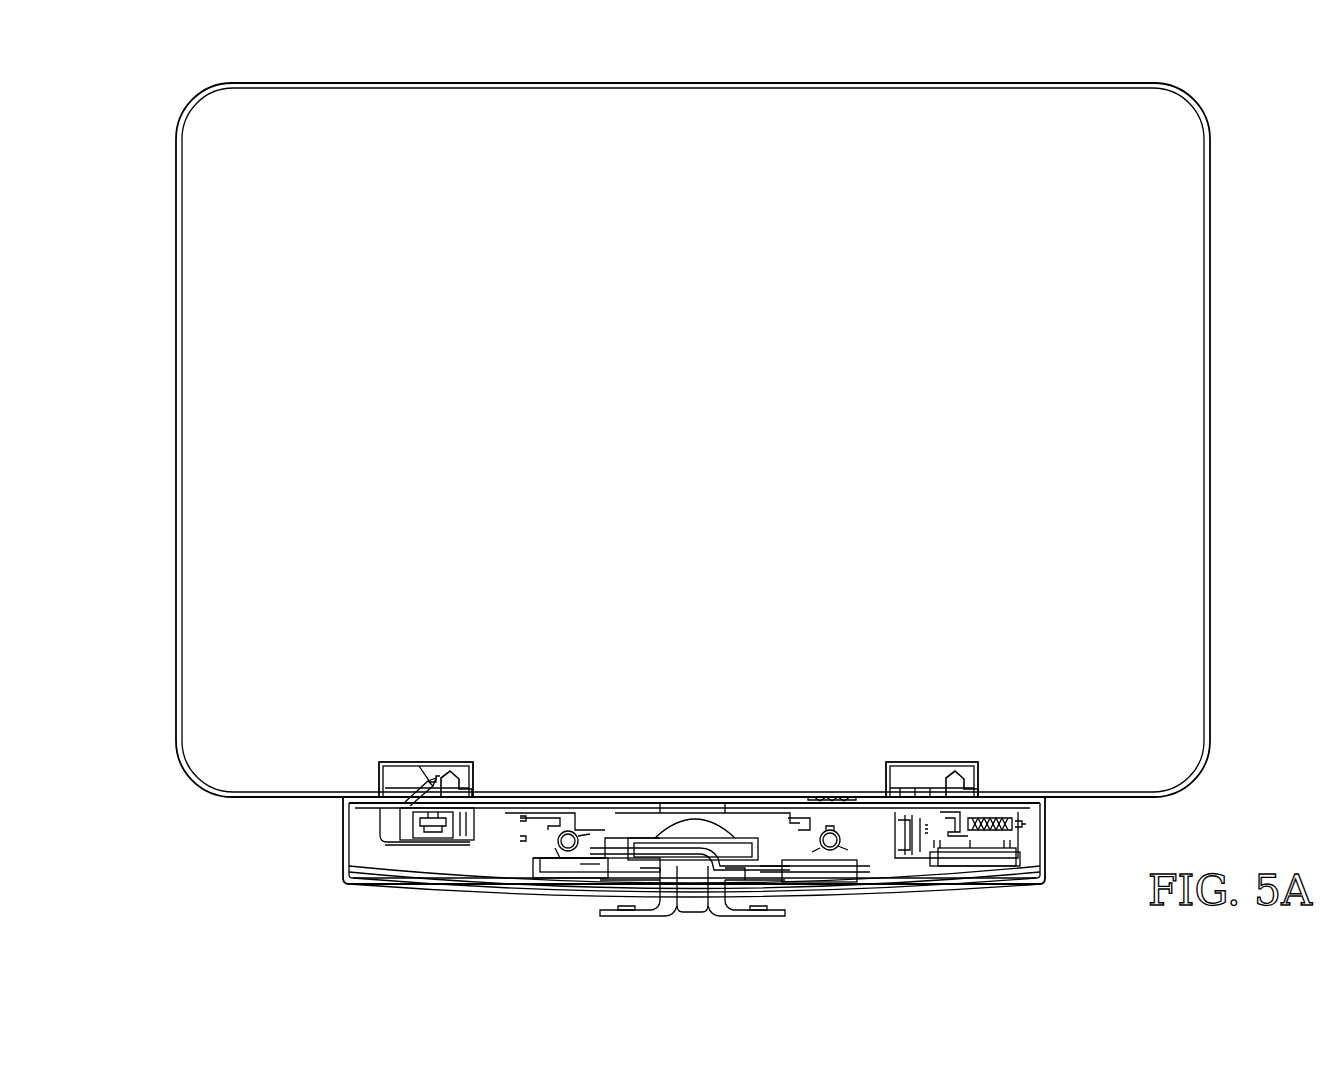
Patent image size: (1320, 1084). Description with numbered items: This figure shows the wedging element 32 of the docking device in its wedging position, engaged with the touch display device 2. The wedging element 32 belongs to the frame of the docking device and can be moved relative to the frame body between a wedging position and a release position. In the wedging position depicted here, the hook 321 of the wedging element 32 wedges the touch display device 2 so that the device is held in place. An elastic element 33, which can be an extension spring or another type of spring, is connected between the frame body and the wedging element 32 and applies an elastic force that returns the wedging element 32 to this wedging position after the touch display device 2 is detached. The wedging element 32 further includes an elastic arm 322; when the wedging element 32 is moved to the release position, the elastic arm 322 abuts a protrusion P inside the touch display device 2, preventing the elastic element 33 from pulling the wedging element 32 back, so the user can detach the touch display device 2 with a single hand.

The touch display device 2 is at (198, 448).
The protrusion P is at (425, 768).
The wedging element 32 is at (950, 820).
The hook 321 is at (452, 783).
The elastic arm 322 is at (430, 786).
The elastic element 33 is at (995, 820).